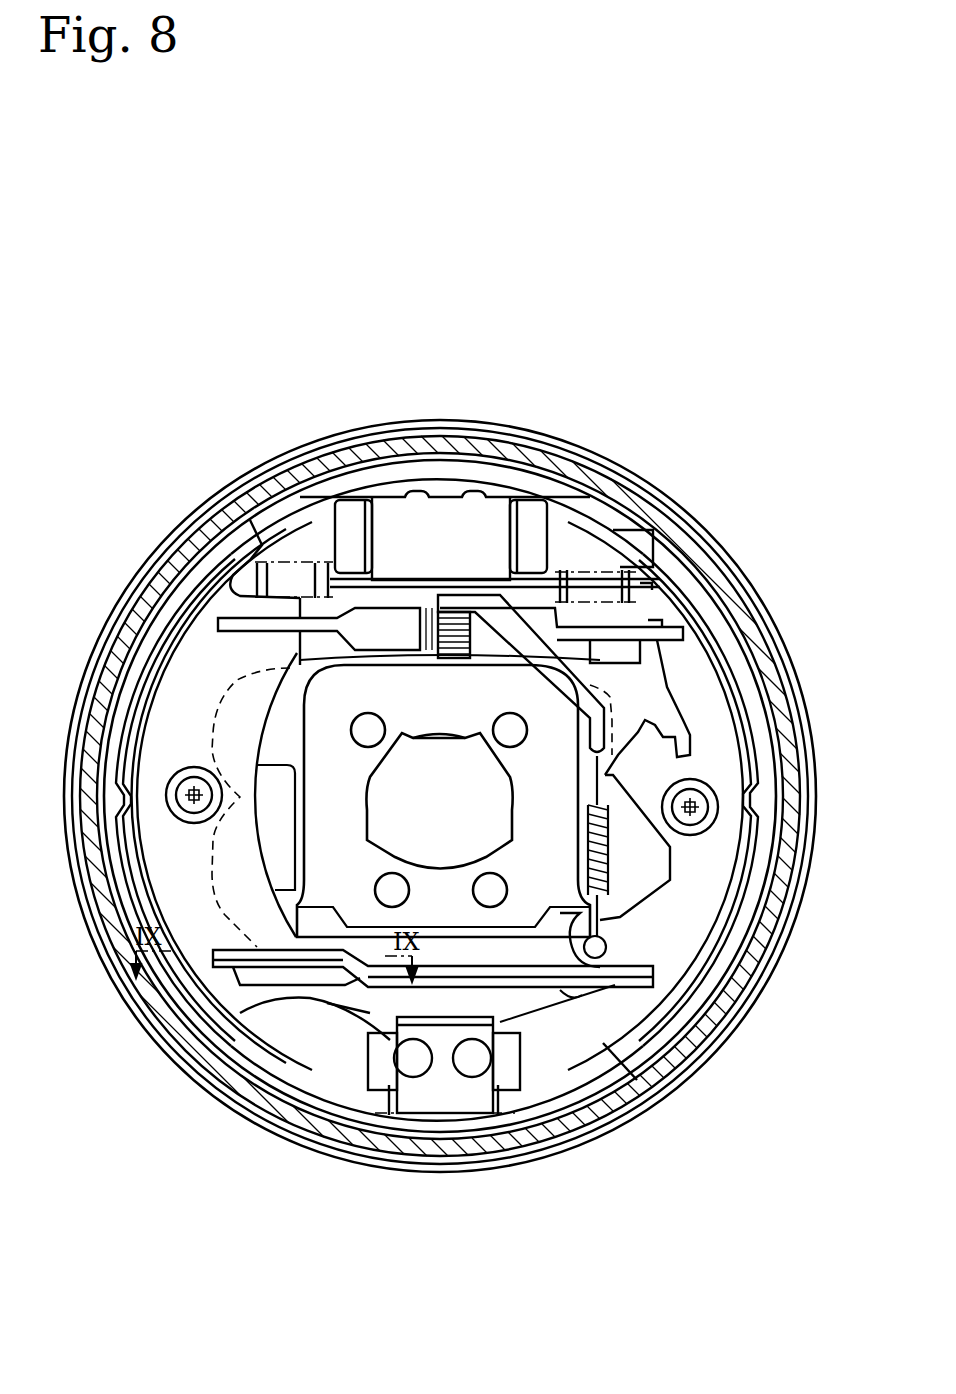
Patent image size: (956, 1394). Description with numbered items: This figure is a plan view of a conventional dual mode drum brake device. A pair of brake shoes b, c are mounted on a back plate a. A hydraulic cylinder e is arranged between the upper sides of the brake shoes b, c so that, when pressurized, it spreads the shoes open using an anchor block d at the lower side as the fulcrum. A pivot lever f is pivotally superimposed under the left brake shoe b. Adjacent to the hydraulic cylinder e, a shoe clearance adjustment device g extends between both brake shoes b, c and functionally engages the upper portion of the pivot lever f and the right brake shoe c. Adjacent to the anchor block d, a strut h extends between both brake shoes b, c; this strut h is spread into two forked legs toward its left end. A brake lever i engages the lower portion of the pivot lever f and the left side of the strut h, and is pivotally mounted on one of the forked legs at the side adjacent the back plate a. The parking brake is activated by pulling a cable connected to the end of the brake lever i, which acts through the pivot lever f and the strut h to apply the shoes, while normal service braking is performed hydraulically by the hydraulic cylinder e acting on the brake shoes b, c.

The back plate a is at (590, 503).
The left brake shoe b is at (185, 580).
The right brake shoe c is at (700, 600).
The anchor block d is at (450, 1095).
The hydraulic cylinder e is at (465, 492).
The pivot lever f is at (257, 722).
The shoe clearance adjustment device g is at (498, 655).
The strut h is at (470, 950).
The brake lever i is at (287, 985).